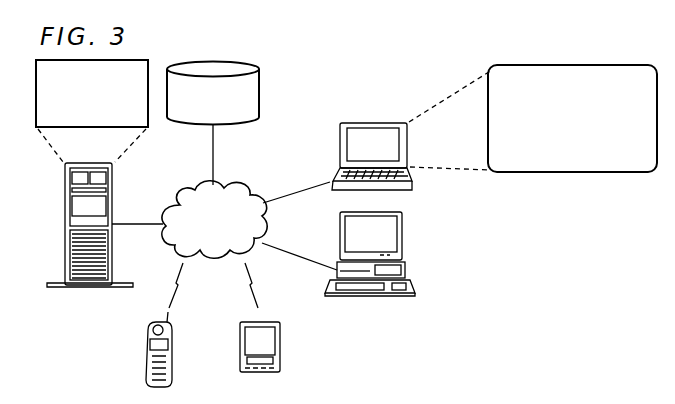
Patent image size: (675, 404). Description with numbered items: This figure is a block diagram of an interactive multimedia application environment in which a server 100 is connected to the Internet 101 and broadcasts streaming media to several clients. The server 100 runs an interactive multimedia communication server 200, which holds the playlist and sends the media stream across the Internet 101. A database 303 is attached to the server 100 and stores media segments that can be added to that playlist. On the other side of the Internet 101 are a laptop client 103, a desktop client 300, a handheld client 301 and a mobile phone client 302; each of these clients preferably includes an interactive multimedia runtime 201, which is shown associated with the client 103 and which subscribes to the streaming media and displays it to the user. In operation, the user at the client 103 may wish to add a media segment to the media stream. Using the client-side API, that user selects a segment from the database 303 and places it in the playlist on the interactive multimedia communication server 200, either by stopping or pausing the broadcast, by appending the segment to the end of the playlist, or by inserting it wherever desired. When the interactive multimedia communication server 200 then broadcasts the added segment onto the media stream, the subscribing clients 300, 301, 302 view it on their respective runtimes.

The server 100 is at (65, 243).
The Internet 101 is at (185, 195).
The client 103 is at (412, 183).
The interactive multimedia communication server 200 is at (78, 100).
The interactive multimedia runtime 201 is at (557, 126).
The client 300 is at (415, 285).
The client 301 is at (282, 350).
The client 302 is at (143, 360).
The database 303 is at (261, 92).